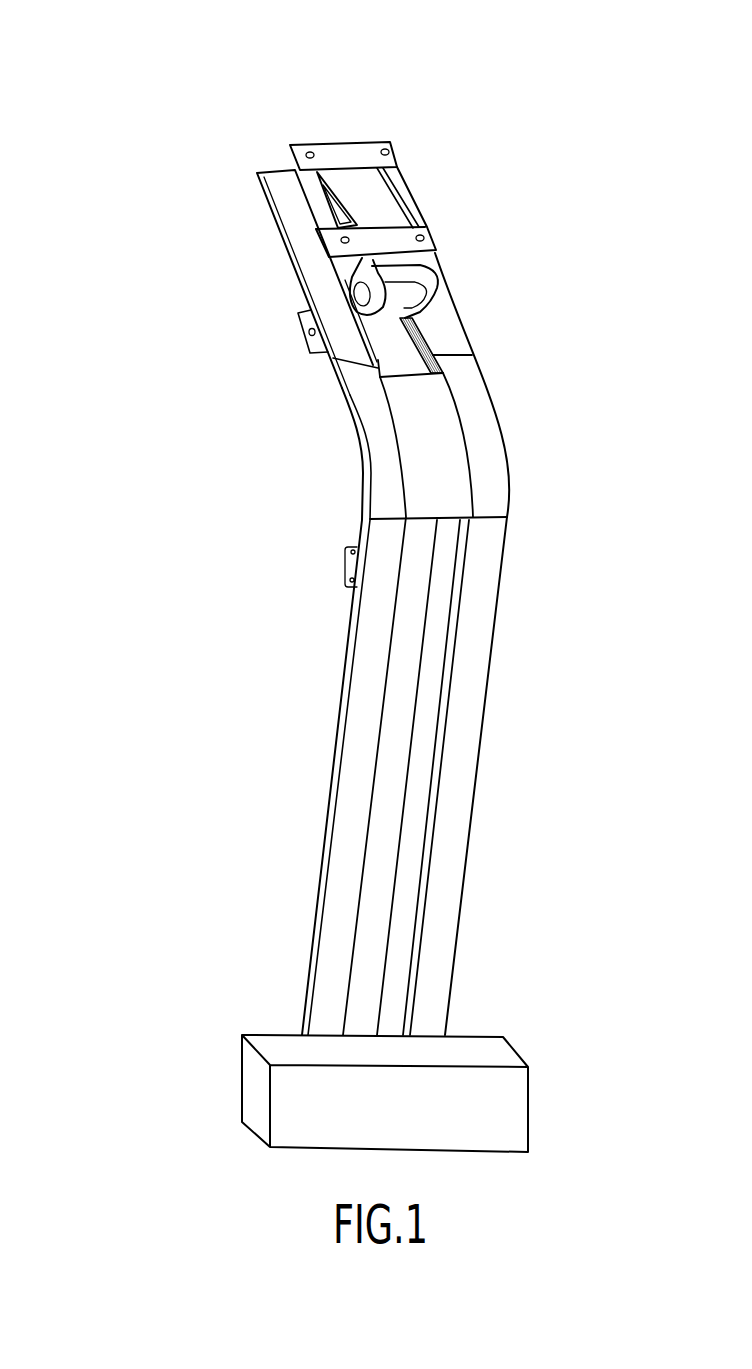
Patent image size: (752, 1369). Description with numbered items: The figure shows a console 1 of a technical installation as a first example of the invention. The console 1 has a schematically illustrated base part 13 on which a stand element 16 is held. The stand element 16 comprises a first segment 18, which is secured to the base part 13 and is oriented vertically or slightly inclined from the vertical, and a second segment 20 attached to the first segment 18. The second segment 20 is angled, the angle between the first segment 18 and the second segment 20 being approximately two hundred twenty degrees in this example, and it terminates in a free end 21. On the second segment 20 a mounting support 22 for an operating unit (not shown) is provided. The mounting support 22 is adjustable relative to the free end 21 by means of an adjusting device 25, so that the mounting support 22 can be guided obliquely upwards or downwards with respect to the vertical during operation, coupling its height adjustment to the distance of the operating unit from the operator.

The console 1 is at (120, 48).
The base part 13 is at (505, 1055).
The stand element 16 is at (288, 649).
The first segment 18 is at (452, 898).
The second segment 20 is at (250, 261).
The free end 21 is at (445, 136).
The mounting support 22 is at (372, 211).
The adjusting device 25 is at (528, 250).